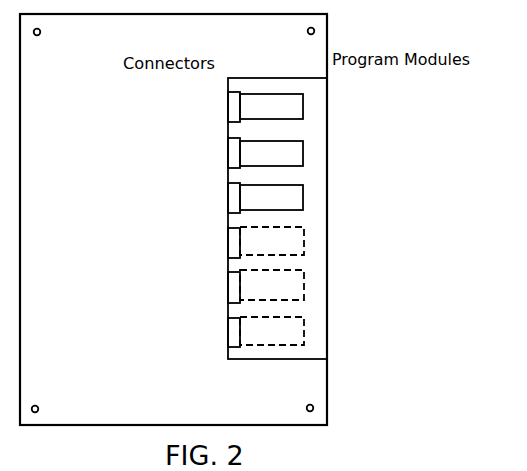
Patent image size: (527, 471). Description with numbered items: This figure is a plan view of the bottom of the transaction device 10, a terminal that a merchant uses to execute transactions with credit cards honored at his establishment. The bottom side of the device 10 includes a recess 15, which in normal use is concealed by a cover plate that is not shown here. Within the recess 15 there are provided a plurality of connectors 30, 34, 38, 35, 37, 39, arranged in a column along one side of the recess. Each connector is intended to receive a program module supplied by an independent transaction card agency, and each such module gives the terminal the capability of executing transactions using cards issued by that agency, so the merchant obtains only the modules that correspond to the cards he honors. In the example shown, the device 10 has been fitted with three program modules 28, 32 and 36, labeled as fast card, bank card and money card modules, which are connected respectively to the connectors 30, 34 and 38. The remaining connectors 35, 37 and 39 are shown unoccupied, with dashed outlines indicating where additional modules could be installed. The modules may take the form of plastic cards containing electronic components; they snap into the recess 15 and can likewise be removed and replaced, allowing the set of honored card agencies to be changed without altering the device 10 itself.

The transaction device 10 is at (364, 309).
The recess 15 is at (322, 255).
The program module 28 is at (303, 110).
The connector 30 is at (233, 112).
The program module 32 is at (303, 152).
The connector 34 is at (233, 158).
The program module 36 is at (303, 197).
The connector 38 is at (233, 197).
The connector 35 is at (233, 245).
The connector 37 is at (233, 285).
The connector 39 is at (233, 327).